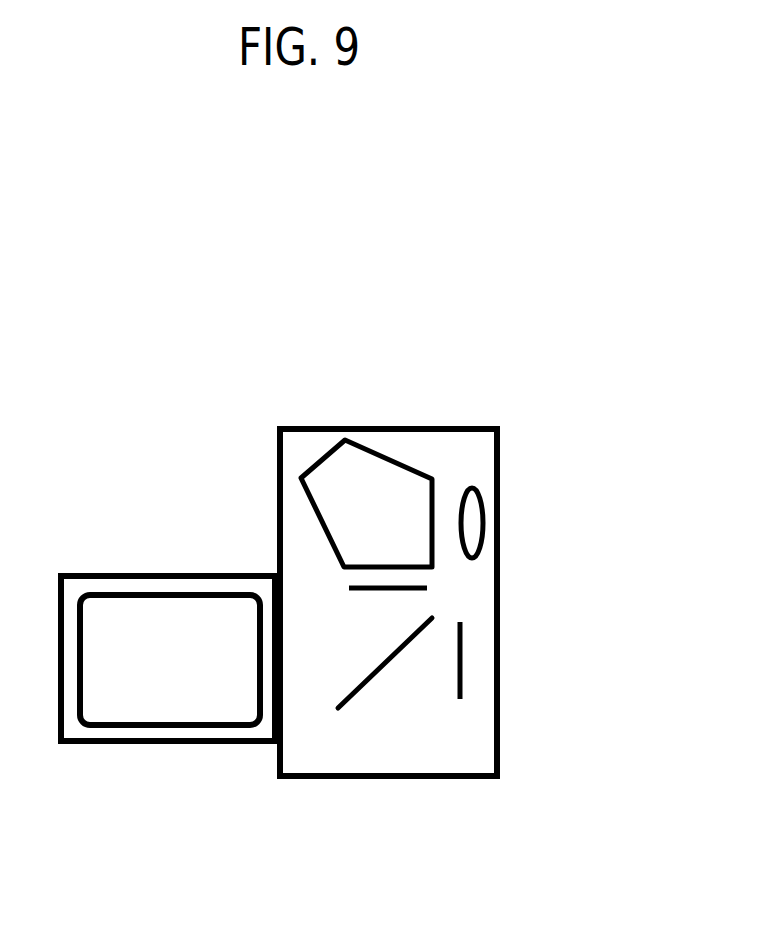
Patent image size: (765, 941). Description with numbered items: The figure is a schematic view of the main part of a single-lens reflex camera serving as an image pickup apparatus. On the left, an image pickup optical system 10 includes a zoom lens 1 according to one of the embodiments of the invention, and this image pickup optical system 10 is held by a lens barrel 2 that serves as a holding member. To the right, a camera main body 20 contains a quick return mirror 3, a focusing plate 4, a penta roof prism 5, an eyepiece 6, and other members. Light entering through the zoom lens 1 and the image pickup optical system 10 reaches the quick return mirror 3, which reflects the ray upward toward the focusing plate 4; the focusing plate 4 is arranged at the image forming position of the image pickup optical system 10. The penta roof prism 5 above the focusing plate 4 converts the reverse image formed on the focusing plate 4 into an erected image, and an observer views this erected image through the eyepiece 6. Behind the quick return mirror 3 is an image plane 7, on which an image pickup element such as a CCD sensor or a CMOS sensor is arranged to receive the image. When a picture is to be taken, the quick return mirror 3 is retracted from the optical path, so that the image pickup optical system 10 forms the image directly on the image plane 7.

The zoom lens 1 is at (155, 593).
The lens barrel 2 is at (173, 743).
The image pickup optical system 10 is at (202, 565).
The camera main body 20 is at (364, 405).
The quick return mirror 3 is at (363, 690).
The focusing plate 4 is at (363, 593).
The penta roof prism 5 is at (325, 455).
The eyepiece 6 is at (483, 493).
The image plane 7 is at (463, 657).